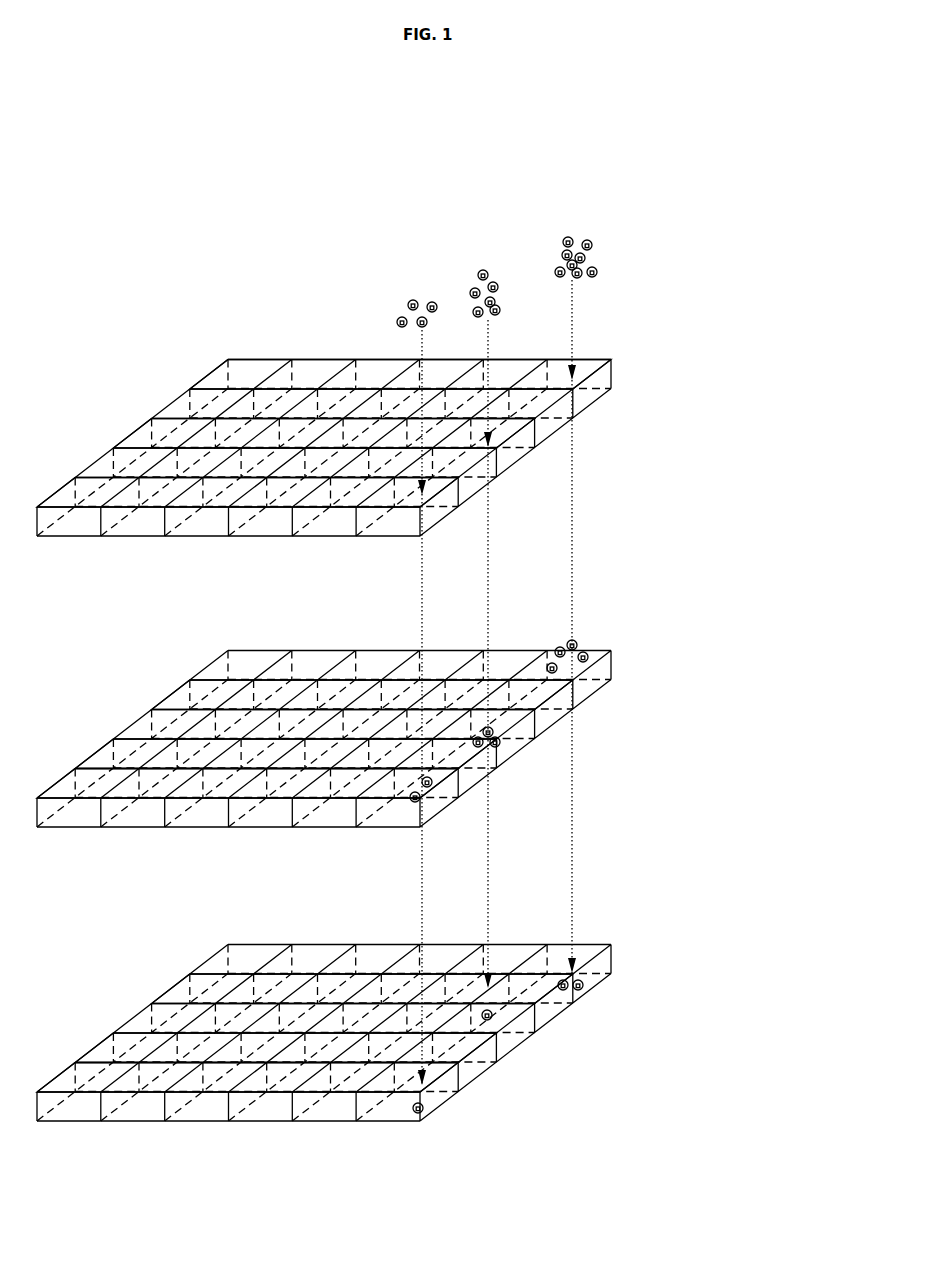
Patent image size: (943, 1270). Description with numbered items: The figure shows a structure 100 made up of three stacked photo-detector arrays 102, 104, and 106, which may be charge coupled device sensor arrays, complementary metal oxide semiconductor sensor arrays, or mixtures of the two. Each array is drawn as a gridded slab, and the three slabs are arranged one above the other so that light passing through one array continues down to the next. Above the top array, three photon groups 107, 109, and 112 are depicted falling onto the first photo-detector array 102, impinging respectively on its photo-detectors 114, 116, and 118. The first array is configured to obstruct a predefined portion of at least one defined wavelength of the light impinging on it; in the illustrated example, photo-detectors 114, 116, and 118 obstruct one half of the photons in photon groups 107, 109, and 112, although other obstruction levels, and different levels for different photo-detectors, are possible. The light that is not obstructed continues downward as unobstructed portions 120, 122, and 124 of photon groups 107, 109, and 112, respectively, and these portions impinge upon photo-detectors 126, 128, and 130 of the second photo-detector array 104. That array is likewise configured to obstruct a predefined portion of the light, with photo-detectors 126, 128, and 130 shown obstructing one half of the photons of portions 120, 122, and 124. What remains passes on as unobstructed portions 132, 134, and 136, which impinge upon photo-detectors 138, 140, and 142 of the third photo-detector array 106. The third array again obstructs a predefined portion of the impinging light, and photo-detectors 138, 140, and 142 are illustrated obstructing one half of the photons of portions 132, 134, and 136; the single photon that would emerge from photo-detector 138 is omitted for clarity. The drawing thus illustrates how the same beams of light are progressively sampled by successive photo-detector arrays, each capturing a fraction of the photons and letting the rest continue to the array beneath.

The structure 100 is at (132, 92).
The photo-detector array 102 is at (209, 303).
The photo-detector array 104 is at (136, 673).
The photo-detector array 106 is at (103, 972).
The photon group 107 is at (628, 238).
The photon group 109 is at (528, 247).
The photon group 112 is at (436, 270).
The photo-detector 114 is at (725, 384).
The photo-detector 116 is at (693, 450).
The photo-detector 118 is at (660, 510).
The unobstructed portion 120 is at (535, 588).
The unobstructed portion 122 is at (457, 615).
The unobstructed portion 124 is at (377, 623).
The photo-detector 126 is at (725, 685).
The photo-detector 128 is at (683, 743).
The photo-detector 130 is at (627, 814).
The unobstructed portion 132 is at (543, 895).
The unobstructed portion 134 is at (462, 915).
The unobstructed portion 136 is at (375, 917).
The photo-detector 138 is at (640, 1001).
The photo-detector 140 is at (572, 1051).
The photo-detector 142 is at (500, 1110).